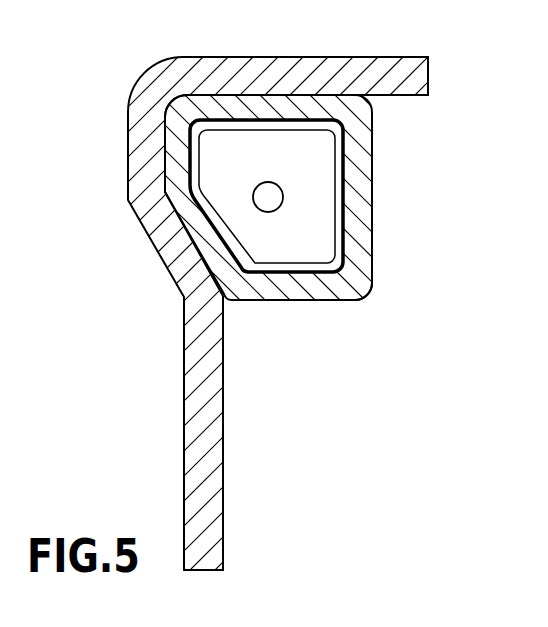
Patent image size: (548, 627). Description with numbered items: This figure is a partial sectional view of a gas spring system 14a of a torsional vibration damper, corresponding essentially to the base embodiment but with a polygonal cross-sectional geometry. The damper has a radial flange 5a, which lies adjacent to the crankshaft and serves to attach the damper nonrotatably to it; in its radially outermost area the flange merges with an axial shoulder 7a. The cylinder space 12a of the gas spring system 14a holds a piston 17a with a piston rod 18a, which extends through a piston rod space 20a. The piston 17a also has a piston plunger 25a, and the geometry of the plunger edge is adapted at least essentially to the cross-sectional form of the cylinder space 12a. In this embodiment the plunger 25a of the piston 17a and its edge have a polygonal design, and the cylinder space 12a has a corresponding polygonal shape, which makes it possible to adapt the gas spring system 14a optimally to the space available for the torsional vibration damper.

The radial flange 5a is at (200, 445).
The axial shoulder 7a is at (364, 68).
The cylinder space 12a is at (341, 157).
The gas spring system 14a is at (205, 110).
The piston 17a is at (280, 208).
The piston rod 18a is at (273, 197).
The piston rod space 20a is at (285, 262).
The piston plunger 25a is at (366, 284).